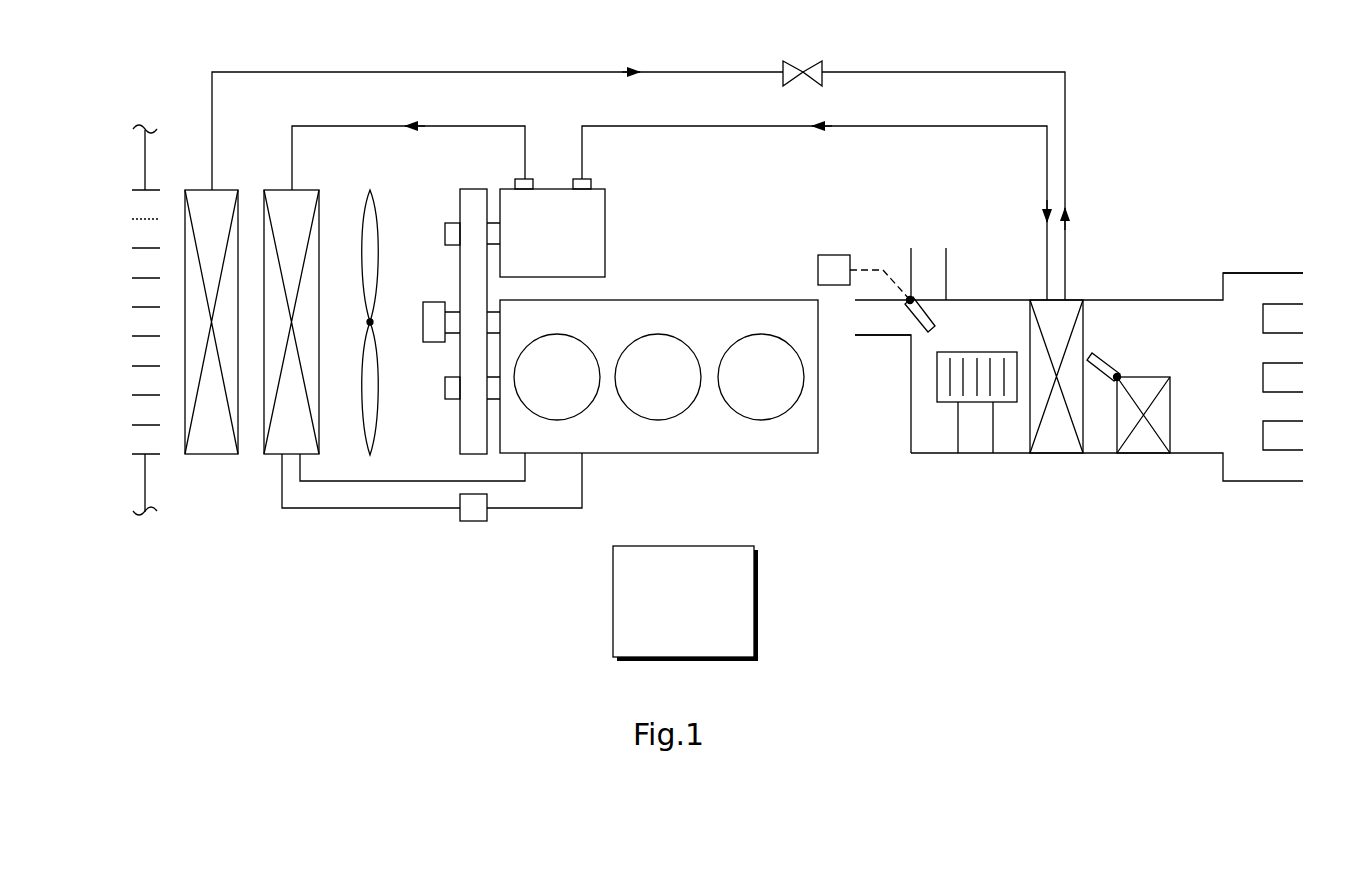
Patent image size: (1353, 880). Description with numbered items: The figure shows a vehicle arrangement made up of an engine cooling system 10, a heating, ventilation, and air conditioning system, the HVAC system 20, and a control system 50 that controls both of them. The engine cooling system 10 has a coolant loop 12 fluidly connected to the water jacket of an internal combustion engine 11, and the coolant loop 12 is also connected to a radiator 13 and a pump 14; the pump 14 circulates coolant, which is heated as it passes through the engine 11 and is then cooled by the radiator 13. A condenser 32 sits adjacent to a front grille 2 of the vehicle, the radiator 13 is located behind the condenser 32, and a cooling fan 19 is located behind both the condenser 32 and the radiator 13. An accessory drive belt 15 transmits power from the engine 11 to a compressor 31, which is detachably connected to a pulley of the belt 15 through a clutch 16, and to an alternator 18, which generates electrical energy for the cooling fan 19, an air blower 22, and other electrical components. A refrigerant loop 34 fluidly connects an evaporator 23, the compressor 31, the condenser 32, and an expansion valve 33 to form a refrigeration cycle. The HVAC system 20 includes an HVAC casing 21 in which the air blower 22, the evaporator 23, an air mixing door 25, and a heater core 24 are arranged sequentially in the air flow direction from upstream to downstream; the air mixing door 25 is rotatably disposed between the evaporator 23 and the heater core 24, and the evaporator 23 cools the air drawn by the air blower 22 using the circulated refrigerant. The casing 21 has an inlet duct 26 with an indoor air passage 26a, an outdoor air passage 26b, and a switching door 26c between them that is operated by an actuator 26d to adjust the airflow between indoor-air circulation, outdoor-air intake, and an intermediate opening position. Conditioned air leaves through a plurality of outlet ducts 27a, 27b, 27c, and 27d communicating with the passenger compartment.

The front grille 2 is at (116, 336).
The engine cooling system 10 is at (540, 512).
The internal combustion engine 11 is at (662, 454).
The coolant loop 12 is at (373, 509).
The radiator 13 is at (306, 190).
The pump 14 is at (476, 522).
The accessory drive belt 15 is at (460, 430).
The clutch 16 is at (490, 224).
The alternator 18 is at (432, 302).
The cooling fan 19 is at (380, 388).
The HVAC system 20 is at (1079, 346).
The HVAC casing 21 is at (1143, 300).
The air blower 22 is at (937, 396).
The evaporator 23 is at (1058, 454).
The heater core 24 is at (1147, 454).
The air mixing door 25 is at (1108, 365).
The inlet duct 26 is at (908, 295).
The indoor air passage 26a is at (910, 262).
The outdoor air passage 26b is at (885, 337).
The switching door 26c is at (946, 300).
The actuator 26d is at (832, 255).
The outlet duct 27a is at (1258, 273).
The outlet duct 27b is at (1297, 328).
The outlet duct 27c is at (1297, 388).
The outlet duct 27d is at (1263, 482).
The compressor 31 is at (605, 234).
The condenser 32 is at (213, 455).
The expansion valve 33 is at (802, 71).
The refrigerant loop 34 is at (760, 127).
The control system 50 is at (758, 598).